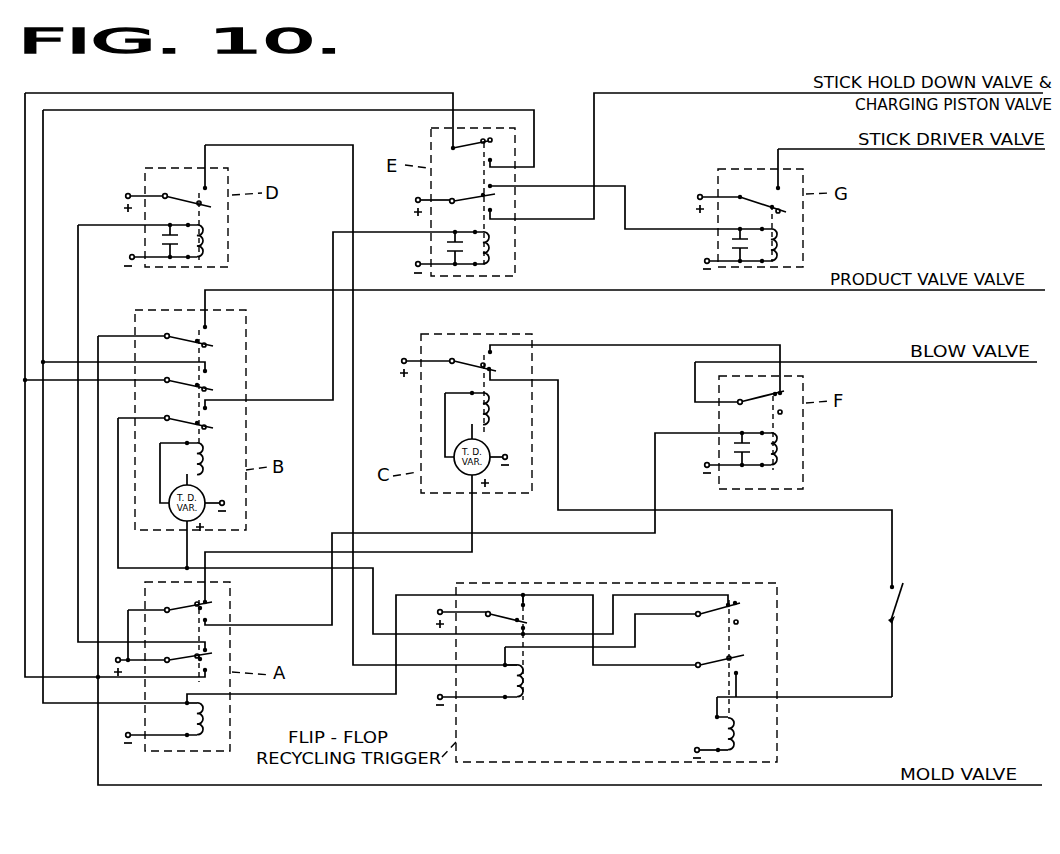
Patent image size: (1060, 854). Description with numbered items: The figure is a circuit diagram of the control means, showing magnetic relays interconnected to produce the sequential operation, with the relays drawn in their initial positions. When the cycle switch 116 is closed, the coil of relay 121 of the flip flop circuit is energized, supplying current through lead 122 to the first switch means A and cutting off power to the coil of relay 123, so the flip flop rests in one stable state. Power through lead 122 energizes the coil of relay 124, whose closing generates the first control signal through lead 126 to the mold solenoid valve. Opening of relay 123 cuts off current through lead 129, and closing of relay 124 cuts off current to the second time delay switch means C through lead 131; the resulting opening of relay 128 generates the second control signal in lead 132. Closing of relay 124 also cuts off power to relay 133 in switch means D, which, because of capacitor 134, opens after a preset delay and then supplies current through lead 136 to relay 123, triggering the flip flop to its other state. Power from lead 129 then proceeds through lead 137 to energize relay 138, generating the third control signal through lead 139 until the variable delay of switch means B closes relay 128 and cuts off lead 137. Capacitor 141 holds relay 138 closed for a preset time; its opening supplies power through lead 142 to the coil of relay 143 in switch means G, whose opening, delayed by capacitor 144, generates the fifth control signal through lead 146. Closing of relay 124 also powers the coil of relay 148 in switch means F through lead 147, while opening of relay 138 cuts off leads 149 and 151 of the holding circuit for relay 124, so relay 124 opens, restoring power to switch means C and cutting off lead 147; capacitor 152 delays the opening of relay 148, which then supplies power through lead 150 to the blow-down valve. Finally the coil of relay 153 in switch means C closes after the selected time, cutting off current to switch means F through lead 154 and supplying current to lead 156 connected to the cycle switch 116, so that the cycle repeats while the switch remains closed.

The cycle switch 116 is at (922, 640).
The relay of the flip flop circuit 121 is at (694, 734).
The lead 122 is at (441, 657).
The relay of the flip flop circuit 123 is at (537, 702).
The relay of switch means A 124 is at (241, 719).
The lead 126 is at (570, 732).
The relay of time delay switch means B 128 is at (247, 451).
The lead 129 is at (424, 527).
The lead 131 is at (343, 538).
The lead 132 is at (625, 295).
The relay of switch means D 133 is at (238, 241).
The capacitor 134 is at (139, 241).
The lead 136 is at (361, 405).
The lead 137 is at (344, 320).
The relay of switch means E 138 is at (526, 248).
The lead 139 is at (766, 143).
The capacitor 141 is at (426, 248).
The lead 142 is at (630, 207).
The relay of switch means G 143 is at (820, 242).
The capacitor 144 is at (713, 245).
The lead 146 is at (910, 157).
The lead 147 is at (487, 541).
The relay of switch means F 148 is at (820, 448).
The lead 149 is at (240, 111).
The lead 150 is at (866, 369).
The lead 151 is at (288, 138).
The capacitor 152 is at (714, 449).
The relay of time delay switch means C 153 is at (507, 415).
The lead 154 is at (635, 357).
The lead 156 is at (692, 479).